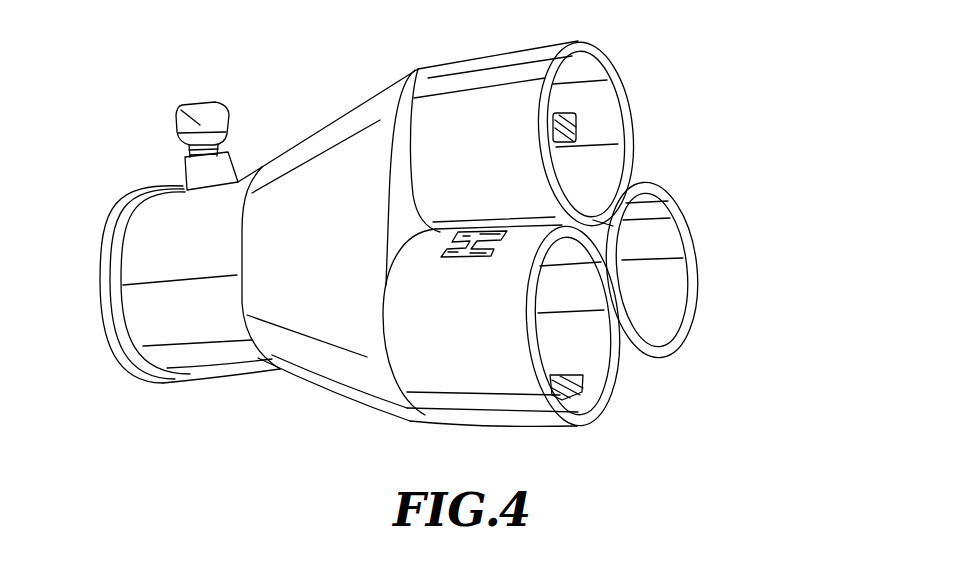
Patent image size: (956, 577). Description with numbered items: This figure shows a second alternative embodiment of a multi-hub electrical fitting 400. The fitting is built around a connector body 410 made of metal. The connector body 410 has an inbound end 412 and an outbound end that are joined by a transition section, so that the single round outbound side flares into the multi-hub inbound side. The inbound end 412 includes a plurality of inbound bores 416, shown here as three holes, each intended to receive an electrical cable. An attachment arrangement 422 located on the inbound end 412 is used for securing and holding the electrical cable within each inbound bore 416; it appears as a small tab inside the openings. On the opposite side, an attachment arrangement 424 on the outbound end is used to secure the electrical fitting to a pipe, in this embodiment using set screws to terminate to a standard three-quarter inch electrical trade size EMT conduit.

The multi-hub electrical fitting 400 is at (461, 225).
The connector body 410 is at (327, 150).
The inbound end 412 is at (603, 225).
The inbound bores 416 is at (667, 317).
The attachment arrangement 422 is at (577, 121).
The attachment arrangement 424 is at (197, 122).